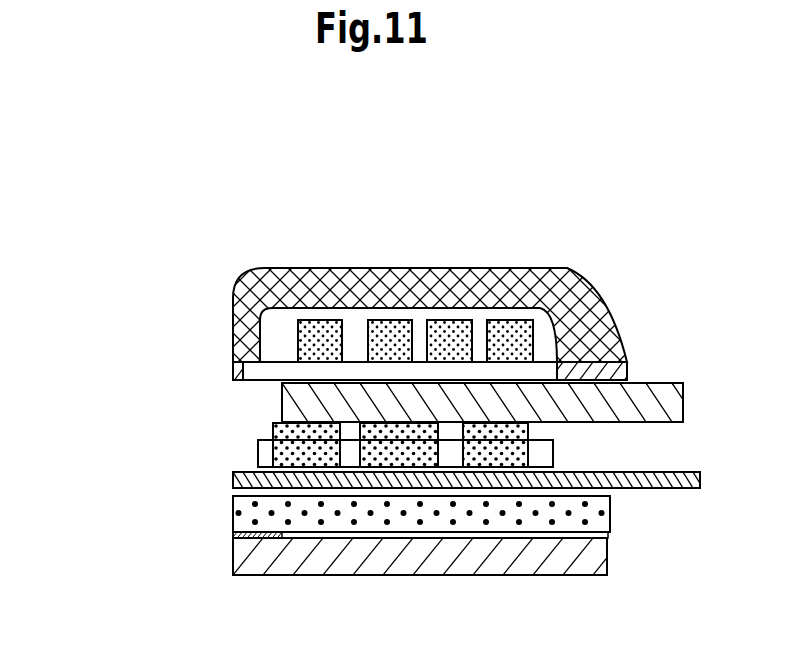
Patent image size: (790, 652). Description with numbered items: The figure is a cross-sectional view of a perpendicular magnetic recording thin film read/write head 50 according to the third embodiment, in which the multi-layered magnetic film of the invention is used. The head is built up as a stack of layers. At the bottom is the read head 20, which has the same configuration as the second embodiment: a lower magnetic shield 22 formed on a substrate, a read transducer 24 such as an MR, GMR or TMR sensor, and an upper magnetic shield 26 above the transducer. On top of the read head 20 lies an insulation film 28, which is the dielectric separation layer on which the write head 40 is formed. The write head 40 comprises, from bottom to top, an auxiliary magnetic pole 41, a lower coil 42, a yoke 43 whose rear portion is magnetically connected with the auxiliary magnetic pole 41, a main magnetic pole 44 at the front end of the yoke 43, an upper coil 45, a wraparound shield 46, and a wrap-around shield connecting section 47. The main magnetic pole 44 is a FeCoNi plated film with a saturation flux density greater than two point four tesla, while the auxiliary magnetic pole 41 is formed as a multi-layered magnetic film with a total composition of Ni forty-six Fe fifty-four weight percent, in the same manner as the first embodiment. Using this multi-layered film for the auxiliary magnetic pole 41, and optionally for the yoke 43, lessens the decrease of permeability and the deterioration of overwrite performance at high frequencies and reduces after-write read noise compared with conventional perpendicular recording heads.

The perpendicular magnetic recording thin film read/write head 50 is at (171, 178).
The write head 40 is at (118, 342).
The read head 20 is at (118, 500).
The wrap-around shield connecting section 47 is at (349, 287).
The upper coil 45 is at (392, 343).
The wraparound shield 46 is at (232, 370).
The main magnetic pole 44 is at (275, 380).
The yoke 43 is at (282, 406).
The lower coil 42 is at (270, 452).
The auxiliary magnetic pole 41 is at (232, 482).
The insulation film 28 is at (617, 494).
The upper magnetic shield 26 is at (233, 517).
The read transducer 24 is at (233, 536).
The lower magnetic shield 22 is at (233, 563).